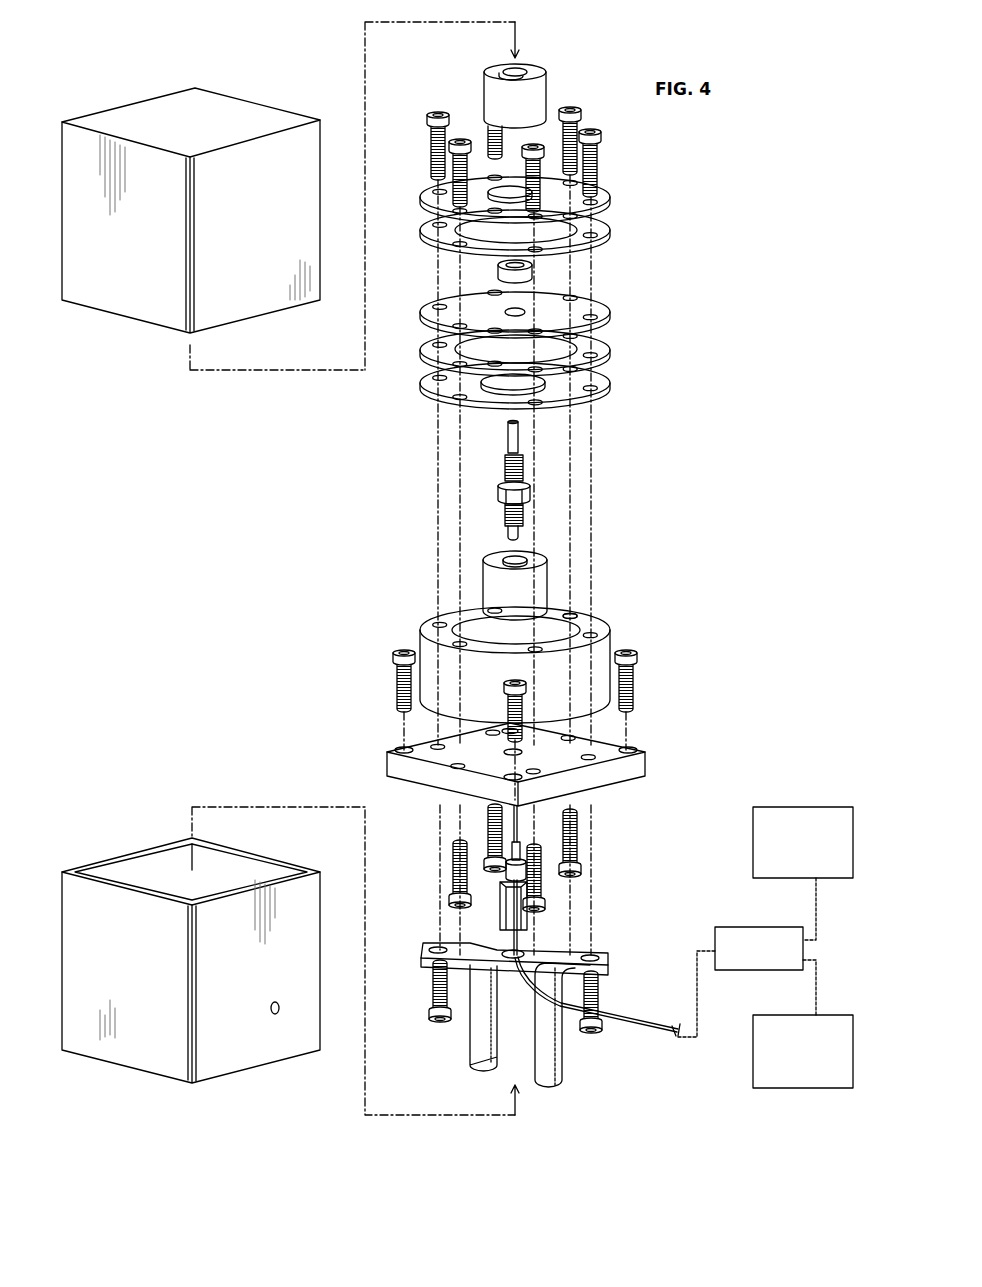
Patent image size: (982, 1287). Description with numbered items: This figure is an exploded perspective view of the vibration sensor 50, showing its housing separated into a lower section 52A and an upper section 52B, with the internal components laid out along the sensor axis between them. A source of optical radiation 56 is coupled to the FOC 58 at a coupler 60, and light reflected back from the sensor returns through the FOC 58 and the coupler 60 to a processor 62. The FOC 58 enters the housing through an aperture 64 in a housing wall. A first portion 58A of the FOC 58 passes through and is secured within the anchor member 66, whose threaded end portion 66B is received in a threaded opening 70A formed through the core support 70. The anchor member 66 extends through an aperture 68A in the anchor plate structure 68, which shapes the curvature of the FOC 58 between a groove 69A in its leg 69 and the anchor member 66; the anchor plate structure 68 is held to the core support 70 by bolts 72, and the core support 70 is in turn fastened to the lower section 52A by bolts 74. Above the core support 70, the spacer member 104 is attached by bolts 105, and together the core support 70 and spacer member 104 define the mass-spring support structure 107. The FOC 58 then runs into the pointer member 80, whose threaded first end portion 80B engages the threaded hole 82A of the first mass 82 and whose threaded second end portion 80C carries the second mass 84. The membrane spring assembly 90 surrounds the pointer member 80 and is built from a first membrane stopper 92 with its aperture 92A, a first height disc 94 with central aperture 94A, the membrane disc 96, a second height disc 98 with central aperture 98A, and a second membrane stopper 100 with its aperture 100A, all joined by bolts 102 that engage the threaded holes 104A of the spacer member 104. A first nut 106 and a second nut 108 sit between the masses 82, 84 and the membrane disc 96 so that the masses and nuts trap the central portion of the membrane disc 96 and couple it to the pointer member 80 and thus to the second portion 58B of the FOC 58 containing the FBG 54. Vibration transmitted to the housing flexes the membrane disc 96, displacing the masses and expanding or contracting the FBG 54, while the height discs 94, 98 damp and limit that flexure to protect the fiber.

The vibration sensor 50 is at (95, 84).
The lower section of the housing 52A is at (310, 965).
The upper section of the housing 52B is at (310, 253).
The FBG 54 is at (517, 823).
The source of optical radiation 56 is at (793, 807).
The FOC 58 is at (625, 1018).
The first portion of the FOC 58A is at (528, 922).
The second portion of the FOC 58B is at (512, 834).
The coupler 60 is at (727, 927).
The processor 62 is at (803, 1089).
The aperture 64 is at (280, 1012).
The anchor member 66 is at (542, 890).
The threaded end portion of the anchor member 66B is at (542, 870).
The anchor plate structure 68 is at (514, 1007).
The aperture in the anchor plate structure 68A is at (515, 962).
The leg of the anchor plate structure 69 is at (551, 1035).
The groove 69A is at (560, 1078).
The core support 70 is at (502, 764).
The threaded opening 70A is at (525, 749).
The bolts 72 is at (428, 1020).
The bolts 74 is at (645, 660).
The pointer member 80 is at (510, 477).
The threaded first end portion of the pointer member 80B is at (505, 517).
The threaded second end portion of the pointer member 80C is at (505, 472).
The first mass 82 is at (511, 561).
The threaded hole of the first mass 82A is at (507, 562).
The second mass 84 is at (535, 93).
The membrane spring assembly 90 is at (420, 405).
The first membrane stopper 92 is at (527, 402).
The aperture in the first membrane stopper 92A is at (506, 389).
The first height disc 94 is at (555, 348).
The central aperture of the first height disc 94A is at (562, 350).
The membrane disc 96 is at (607, 320).
The second height disc 98 is at (547, 247).
The central aperture of the second height disc 98A is at (492, 237).
The second membrane stopper 100 is at (552, 149).
The aperture in the second membrane stopper 100A is at (490, 186).
The bolts 102 is at (592, 128).
The spacer member 104 is at (522, 649).
The threaded holes of the spacer member 104A is at (576, 613).
The bolts 105 is at (587, 872).
The first nut 106 is at (529, 495).
The mass-spring support structure 107 is at (383, 782).
The second nut 108 is at (528, 268).